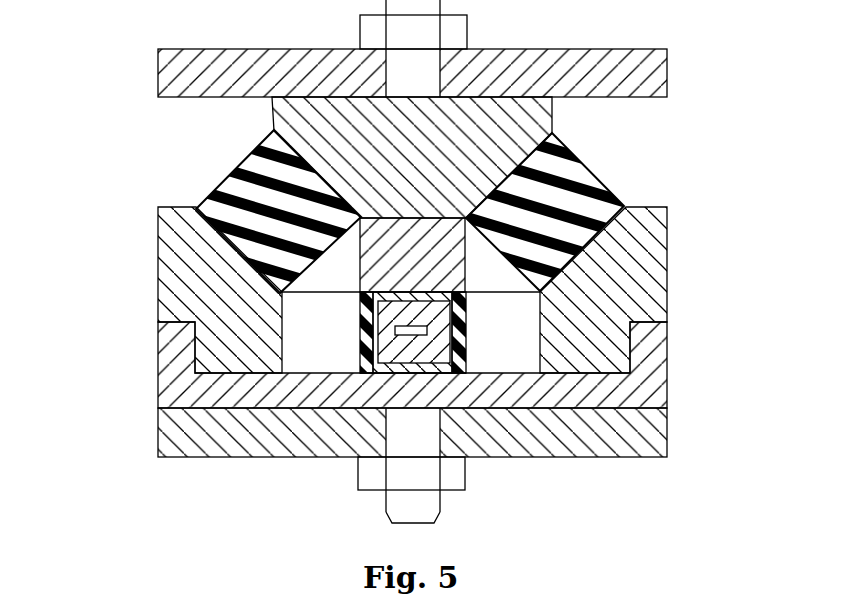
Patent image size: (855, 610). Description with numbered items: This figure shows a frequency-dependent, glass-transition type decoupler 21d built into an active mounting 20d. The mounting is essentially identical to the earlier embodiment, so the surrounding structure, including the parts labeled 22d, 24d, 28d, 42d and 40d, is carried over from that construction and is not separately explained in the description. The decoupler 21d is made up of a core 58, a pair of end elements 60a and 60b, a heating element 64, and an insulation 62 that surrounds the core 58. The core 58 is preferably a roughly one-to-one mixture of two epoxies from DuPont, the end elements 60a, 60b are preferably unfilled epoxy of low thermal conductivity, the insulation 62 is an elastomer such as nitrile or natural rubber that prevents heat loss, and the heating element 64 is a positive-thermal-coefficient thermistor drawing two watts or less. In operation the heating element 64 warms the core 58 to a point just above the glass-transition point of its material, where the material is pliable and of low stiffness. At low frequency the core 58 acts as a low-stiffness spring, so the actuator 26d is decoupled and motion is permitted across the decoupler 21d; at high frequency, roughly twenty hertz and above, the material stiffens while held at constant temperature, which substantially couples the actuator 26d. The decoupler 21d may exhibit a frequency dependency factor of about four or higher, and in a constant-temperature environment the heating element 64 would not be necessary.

The active mounting 20d is at (438, 277).
The decoupler 21d is at (303, 373).
The upper plate 22d is at (667, 62).
The lower plate 24d is at (667, 424).
The actuator 26d is at (443, 224).
The right wedge 28d is at (583, 163).
The left wedge 42d is at (273, 107).
The housing 40d is at (684, 289).
The end element 60a is at (410, 292).
The end element 60b is at (380, 378).
The insulation 62 is at (467, 300).
The heating element 64 is at (430, 331).
The core 58 is at (440, 343).